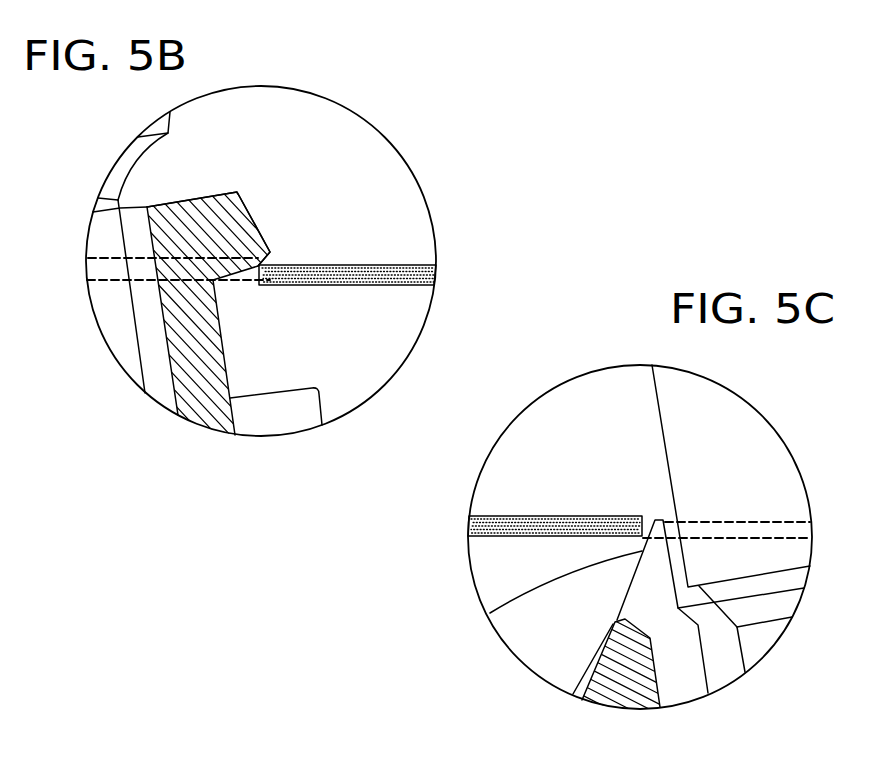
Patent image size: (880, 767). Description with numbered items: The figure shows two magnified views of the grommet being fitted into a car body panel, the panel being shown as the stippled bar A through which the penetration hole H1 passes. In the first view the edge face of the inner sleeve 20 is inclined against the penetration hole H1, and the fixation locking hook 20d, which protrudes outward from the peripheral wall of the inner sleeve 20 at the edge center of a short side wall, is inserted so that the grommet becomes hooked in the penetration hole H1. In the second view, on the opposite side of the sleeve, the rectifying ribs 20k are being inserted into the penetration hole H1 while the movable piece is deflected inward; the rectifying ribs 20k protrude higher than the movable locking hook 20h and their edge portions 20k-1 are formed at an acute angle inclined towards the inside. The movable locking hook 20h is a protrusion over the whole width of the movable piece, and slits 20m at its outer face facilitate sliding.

In FIG. 5B, the inner sleeve 20 is at (187, 387).
In FIG. 5B, the fixation locking hook 20d is at (254, 223).
In FIG. 5B, the sheet member A is at (325, 260).
In FIG. 5C, the sheet member A is at (505, 536).
In FIG. 5B, the penetration hole H1 is at (247, 288).
In FIG. 5C, the penetration hole H1 is at (650, 517).
In FIG. 5C, the rectifying ribs 20k is at (625, 600).
In FIG. 5C, the edge portions 20k-1 is at (490, 613).
In FIG. 5C, the slits 20m is at (590, 662).
In FIG. 5C, the movable locking hook 20h is at (645, 677).